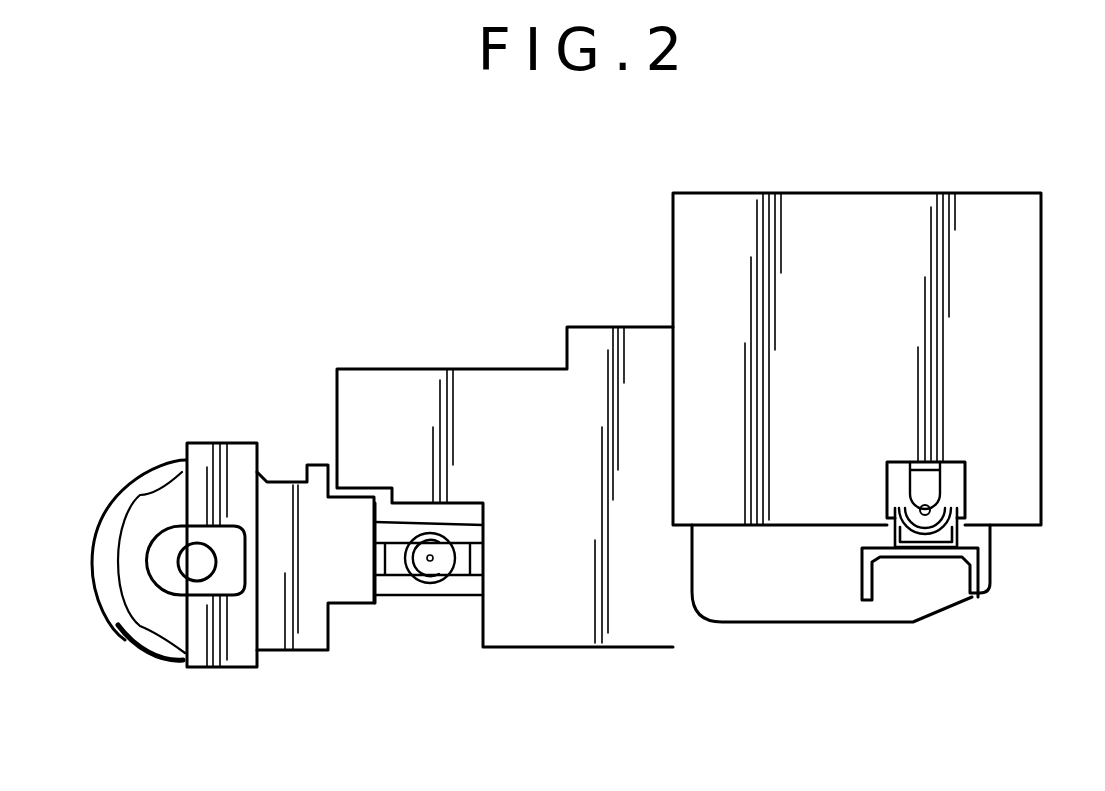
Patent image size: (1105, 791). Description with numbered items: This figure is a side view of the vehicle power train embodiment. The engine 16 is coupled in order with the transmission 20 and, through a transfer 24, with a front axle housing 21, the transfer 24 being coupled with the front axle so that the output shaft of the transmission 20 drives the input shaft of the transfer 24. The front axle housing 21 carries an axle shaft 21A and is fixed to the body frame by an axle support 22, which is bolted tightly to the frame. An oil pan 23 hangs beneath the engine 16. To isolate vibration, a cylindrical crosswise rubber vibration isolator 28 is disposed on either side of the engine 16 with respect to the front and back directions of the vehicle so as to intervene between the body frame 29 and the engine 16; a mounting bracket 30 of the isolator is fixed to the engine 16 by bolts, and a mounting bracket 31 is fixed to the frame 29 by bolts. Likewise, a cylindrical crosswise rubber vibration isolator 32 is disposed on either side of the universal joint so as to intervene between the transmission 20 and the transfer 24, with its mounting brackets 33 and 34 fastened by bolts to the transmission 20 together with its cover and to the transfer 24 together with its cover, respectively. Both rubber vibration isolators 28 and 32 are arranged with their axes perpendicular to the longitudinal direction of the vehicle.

The engine 16 is at (750, 193).
The transmission 20 is at (430, 369).
The front axle housing 21 is at (135, 478).
The axle shaft 21A is at (182, 568).
The axle support 22 is at (192, 613).
The oil pan 23 is at (798, 613).
The transfer 24 is at (293, 650).
The rubber vibration isolator 28 is at (947, 501).
The body frame 29 is at (990, 584).
The mounting bracket 30 is at (963, 461).
The mounting bracket 31 is at (960, 541).
The rubber vibration isolator 32 is at (405, 581).
The mounting bracket 33 is at (468, 598).
The mounting bracket 34 is at (392, 568).